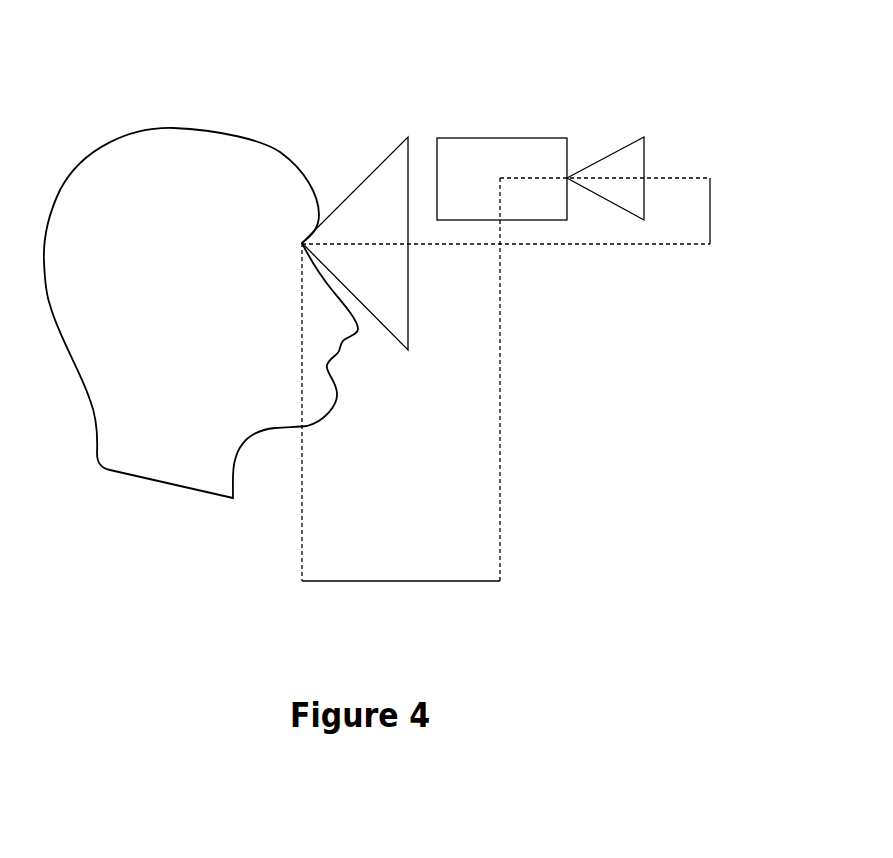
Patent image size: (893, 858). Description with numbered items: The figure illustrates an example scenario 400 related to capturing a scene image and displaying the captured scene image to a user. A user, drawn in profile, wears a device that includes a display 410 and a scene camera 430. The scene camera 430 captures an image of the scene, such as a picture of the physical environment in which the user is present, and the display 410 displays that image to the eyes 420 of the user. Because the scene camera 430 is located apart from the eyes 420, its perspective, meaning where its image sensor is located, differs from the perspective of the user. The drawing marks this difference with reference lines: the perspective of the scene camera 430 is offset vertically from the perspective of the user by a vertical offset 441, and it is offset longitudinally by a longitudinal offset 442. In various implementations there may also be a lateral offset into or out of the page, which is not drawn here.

The example scenario 400 is at (365, 39).
The display 410 is at (383, 155).
The eyes 420 is at (302, 243).
The scene camera 430 is at (496, 138).
The vertical offset 441 is at (710, 217).
The longitudinal offset 442 is at (407, 581).